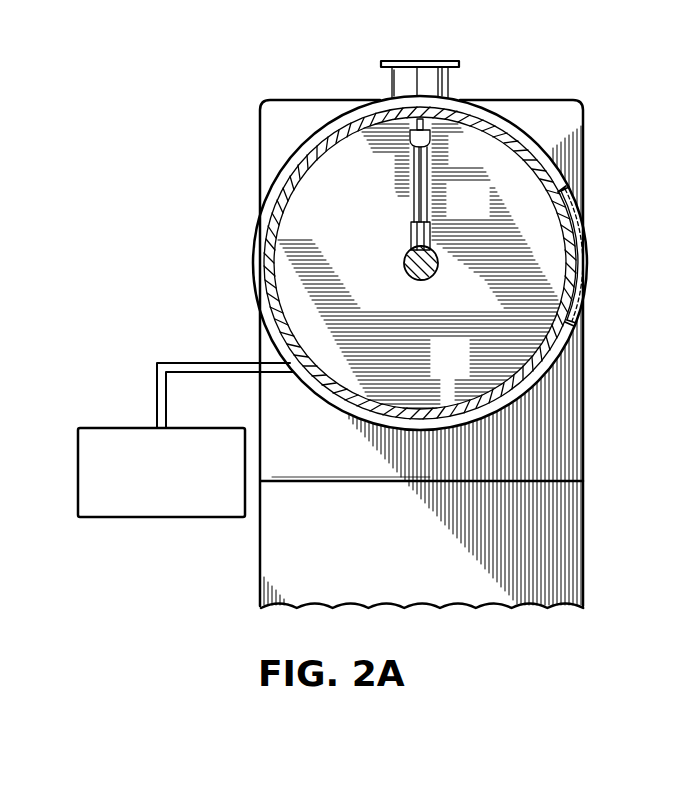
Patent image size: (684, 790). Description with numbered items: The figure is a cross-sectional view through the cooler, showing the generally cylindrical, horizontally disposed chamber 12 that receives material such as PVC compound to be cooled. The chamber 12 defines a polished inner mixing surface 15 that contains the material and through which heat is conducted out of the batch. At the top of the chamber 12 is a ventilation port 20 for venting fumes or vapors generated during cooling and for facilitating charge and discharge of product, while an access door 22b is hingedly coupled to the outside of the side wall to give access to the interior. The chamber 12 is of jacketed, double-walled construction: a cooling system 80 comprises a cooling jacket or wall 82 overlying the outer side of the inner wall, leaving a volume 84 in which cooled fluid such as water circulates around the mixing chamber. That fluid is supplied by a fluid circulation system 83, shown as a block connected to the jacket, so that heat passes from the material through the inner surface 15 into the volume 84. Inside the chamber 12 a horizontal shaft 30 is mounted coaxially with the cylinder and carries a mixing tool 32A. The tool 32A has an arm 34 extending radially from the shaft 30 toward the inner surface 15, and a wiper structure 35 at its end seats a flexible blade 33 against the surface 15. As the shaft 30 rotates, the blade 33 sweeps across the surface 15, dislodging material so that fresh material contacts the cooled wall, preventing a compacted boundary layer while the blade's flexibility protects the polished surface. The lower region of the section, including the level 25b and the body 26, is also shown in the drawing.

The chamber 12 is at (410, 249).
The inner mixing surface 15 is at (449, 397).
The ventilation port 20 is at (437, 62).
The access door 22b is at (593, 258).
The fluid level 25b is at (312, 448).
The fluid reservoir 26 is at (362, 546).
The shaft 30 is at (405, 264).
The mixing tool 32A is at (406, 198).
The flexible blade 33 is at (430, 134).
The arm 34 is at (452, 184).
The wiper structure 35 is at (412, 166).
The cooling system 80 is at (410, 263).
The cooling jacket 82 is at (250, 276).
The fluid circulation system 83 is at (104, 427).
The volume 84 is at (258, 240).